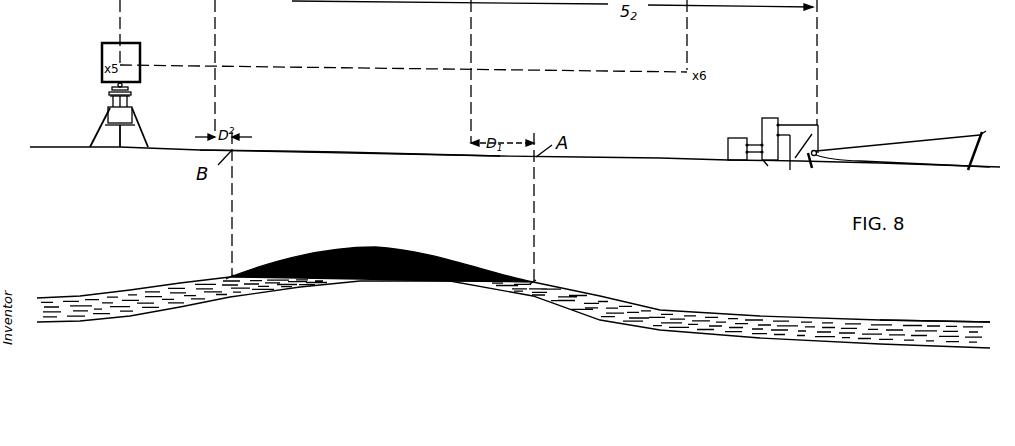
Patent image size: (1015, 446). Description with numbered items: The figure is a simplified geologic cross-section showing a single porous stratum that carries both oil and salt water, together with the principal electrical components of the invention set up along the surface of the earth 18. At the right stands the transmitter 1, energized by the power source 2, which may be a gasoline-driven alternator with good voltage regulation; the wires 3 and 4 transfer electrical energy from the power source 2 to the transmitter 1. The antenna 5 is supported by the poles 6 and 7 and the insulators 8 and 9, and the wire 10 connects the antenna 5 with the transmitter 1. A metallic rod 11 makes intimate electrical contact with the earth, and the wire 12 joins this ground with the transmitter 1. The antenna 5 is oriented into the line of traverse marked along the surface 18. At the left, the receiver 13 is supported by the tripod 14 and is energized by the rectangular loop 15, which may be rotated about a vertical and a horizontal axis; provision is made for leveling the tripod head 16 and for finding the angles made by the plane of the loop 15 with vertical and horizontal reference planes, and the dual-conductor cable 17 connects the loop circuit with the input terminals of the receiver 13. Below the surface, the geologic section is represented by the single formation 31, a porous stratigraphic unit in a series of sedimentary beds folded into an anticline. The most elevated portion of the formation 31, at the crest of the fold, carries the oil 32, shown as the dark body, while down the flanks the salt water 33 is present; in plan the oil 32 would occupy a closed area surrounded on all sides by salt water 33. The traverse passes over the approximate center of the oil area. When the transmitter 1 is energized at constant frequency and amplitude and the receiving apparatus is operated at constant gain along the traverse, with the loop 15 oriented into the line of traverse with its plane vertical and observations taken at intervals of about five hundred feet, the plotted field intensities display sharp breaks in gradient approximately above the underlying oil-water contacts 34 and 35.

The transmitter 1 is at (762, 118).
The power source 2 is at (728, 141).
The wire 3 is at (754, 145).
The wire 4 is at (768, 166).
The antenna 5 is at (895, 143).
The pole 6 is at (817, 152).
The pole 7 is at (976, 158).
The insulator 8 is at (903, 159).
The insulator 9 is at (983, 133).
The wire 10 is at (803, 125).
The metallic rod 11 is at (812, 152).
The wire 12 is at (812, 134).
The receiver 13 is at (132, 108).
The tripod 14 is at (103, 120).
The rectangular loop 15 is at (140, 46).
The tripod head 16 is at (130, 88).
The dual-conductor cable 17 is at (106, 95).
The surface of the earth 18 is at (337, 152).
The formation 31 is at (913, 320).
The oil 32 is at (372, 247).
The salt water 33 is at (105, 310).
The oil-water contact 34 is at (230, 273).
The oil-water contact 35 is at (535, 282).